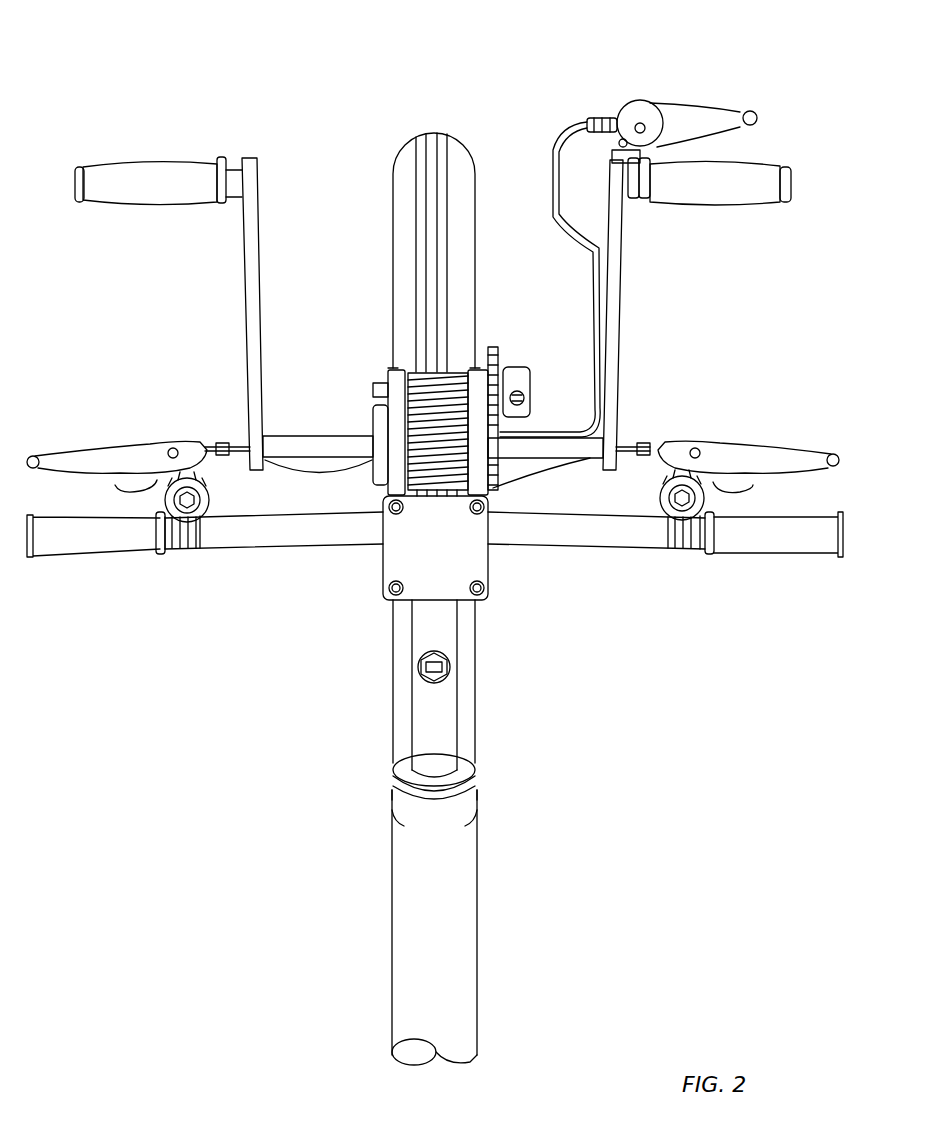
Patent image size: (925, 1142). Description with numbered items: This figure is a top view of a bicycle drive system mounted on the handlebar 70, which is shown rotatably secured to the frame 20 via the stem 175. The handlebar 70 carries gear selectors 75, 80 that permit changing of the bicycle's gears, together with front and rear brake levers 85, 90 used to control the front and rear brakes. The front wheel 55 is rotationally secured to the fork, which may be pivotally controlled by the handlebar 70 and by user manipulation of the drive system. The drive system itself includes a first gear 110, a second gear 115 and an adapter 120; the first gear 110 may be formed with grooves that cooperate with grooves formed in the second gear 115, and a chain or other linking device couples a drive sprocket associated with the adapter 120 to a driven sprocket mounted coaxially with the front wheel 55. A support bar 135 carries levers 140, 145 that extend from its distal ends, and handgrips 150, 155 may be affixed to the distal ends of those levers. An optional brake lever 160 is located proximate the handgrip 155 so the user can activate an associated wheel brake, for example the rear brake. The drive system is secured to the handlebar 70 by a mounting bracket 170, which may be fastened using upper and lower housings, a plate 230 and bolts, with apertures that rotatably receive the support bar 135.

The frame 20 is at (477, 868).
The front wheel 55 is at (465, 148).
The handlebar 70 is at (255, 552).
The gear selector 75 is at (208, 556).
The gear selector 80 is at (648, 525).
The front brake lever 85 is at (120, 453).
The rear brake lever 90 is at (780, 453).
The first gear 110 is at (408, 421).
The second gear 115 is at (450, 370).
The adapter 120 is at (540, 373).
The support bar 135 is at (278, 434).
The lever 140 is at (243, 303).
The lever 145 is at (620, 303).
The handgrip 150 is at (127, 163).
The handgrip 155 is at (753, 160).
The brake lever 160 is at (692, 128).
The mounting bracket 170 is at (366, 592).
The stem 175 is at (440, 732).
The plate 230 is at (480, 562).